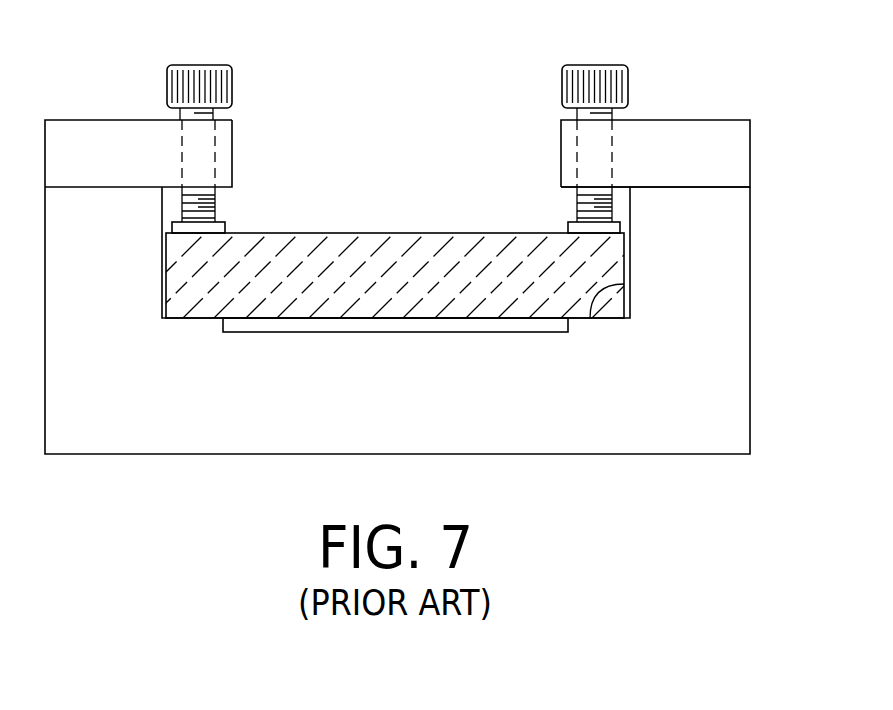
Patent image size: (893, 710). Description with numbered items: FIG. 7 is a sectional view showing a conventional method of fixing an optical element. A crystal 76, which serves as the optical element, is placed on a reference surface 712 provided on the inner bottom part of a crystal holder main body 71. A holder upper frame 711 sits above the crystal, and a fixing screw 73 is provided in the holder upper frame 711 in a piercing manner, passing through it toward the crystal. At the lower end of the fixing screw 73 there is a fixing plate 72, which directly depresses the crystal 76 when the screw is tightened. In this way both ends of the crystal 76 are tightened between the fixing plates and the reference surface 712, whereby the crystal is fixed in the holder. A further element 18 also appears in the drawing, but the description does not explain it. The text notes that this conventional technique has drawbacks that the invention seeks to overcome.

The frame 18 is at (678, 135).
The base body 71 is at (235, 432).
The clamping block 711 is at (568, 147).
The corner groove 712 is at (613, 298).
The washer 72 is at (573, 225).
The screw 73 is at (220, 86).
The plate 76 is at (345, 248).